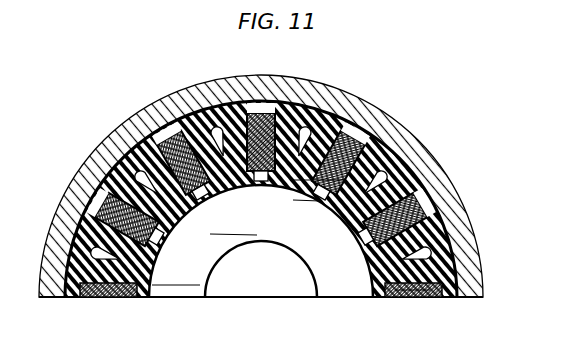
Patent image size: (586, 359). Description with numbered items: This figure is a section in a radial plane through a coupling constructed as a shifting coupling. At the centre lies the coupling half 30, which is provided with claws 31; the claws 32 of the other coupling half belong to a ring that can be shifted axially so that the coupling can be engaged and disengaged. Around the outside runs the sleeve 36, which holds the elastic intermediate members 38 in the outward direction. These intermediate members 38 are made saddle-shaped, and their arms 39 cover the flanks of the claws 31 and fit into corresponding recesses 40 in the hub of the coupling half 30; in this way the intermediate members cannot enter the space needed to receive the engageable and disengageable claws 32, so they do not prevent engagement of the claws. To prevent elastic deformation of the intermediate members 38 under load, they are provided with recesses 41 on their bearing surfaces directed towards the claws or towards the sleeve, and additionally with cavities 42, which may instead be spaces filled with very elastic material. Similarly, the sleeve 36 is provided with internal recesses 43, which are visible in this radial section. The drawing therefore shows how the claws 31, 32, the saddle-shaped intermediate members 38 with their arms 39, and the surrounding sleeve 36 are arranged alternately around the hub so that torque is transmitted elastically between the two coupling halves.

The coupling half 30 is at (330, 265).
The claws 31 is at (188, 109).
The claws 32 is at (264, 116).
The sleeve 36 is at (80, 167).
The intermediate members 38 is at (170, 118).
The arms 39 is at (255, 181).
The recesses 40 is at (193, 205).
The recesses 41 is at (328, 104).
The cavities 42 is at (383, 171).
The internal recesses 43 is at (453, 249).